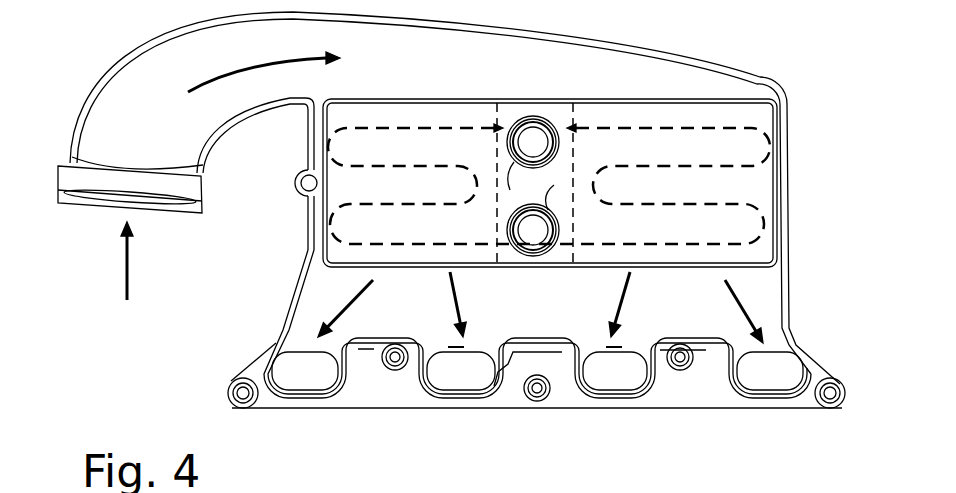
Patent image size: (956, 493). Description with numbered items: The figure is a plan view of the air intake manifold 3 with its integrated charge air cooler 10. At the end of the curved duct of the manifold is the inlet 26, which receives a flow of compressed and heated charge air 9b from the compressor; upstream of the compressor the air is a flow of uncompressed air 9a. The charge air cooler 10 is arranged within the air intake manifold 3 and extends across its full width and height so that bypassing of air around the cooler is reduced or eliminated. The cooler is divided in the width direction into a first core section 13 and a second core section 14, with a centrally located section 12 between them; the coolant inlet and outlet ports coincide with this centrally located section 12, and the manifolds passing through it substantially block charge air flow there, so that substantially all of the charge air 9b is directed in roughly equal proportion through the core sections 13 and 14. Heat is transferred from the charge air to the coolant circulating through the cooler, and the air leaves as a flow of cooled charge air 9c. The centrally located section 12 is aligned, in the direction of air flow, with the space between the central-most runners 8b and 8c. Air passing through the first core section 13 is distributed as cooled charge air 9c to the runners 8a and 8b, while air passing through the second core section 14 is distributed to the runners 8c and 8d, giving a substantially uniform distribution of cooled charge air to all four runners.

The air intake manifold 3 is at (600, 43).
The runner 8a is at (297, 374).
The runner 8b is at (457, 376).
The runner 8c is at (610, 376).
The runner 8d is at (766, 378).
The flow of uncompressed air 9a is at (130, 266).
The flow of charge air 9b is at (223, 72).
The flow of cooled charge air 9c is at (340, 304).
The charge air cooler 10 is at (760, 248).
The centrally located section 12 is at (523, 98).
The first core section 13 is at (378, 97).
The second core section 14 is at (655, 98).
The inlet 26 is at (100, 203).